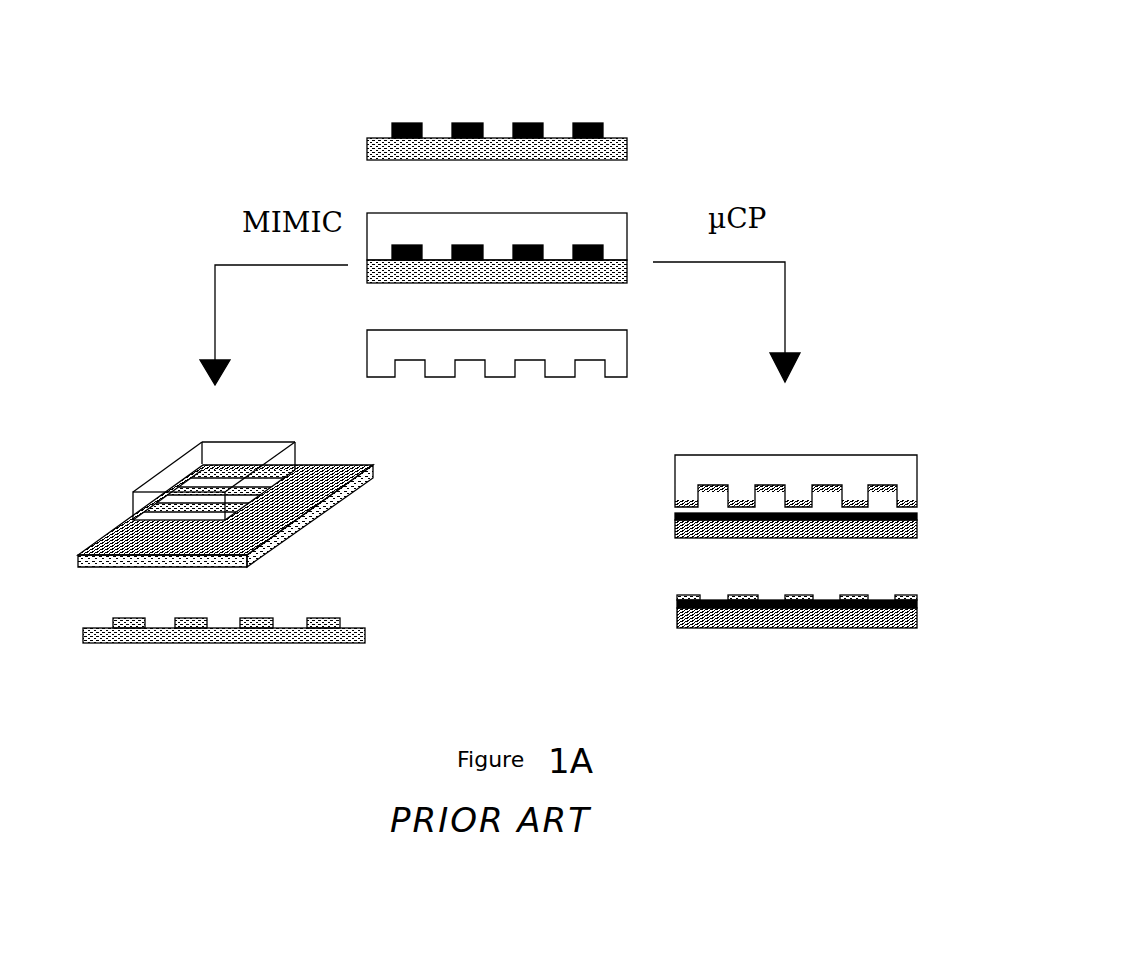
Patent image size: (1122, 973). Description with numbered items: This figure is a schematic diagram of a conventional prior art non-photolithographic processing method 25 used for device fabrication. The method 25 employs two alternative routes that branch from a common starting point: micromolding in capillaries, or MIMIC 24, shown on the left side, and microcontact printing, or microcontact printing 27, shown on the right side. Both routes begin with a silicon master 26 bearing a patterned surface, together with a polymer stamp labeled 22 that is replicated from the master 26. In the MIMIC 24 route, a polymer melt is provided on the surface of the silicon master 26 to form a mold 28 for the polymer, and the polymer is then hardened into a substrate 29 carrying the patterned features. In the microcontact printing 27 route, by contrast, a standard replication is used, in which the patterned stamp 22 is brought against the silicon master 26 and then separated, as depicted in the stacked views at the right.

The non-photolithographic processing method 25 is at (736, 62).
The silicon master 26 is at (627, 136).
The PDMS stamp / mold 22 is at (607, 223).
The micromolding in capillaries (MIMIC) 24 is at (215, 288).
The microcontact printing (µCP) 27 is at (787, 290).
The mold 28 is at (273, 467).
The substrate 29 is at (365, 634).